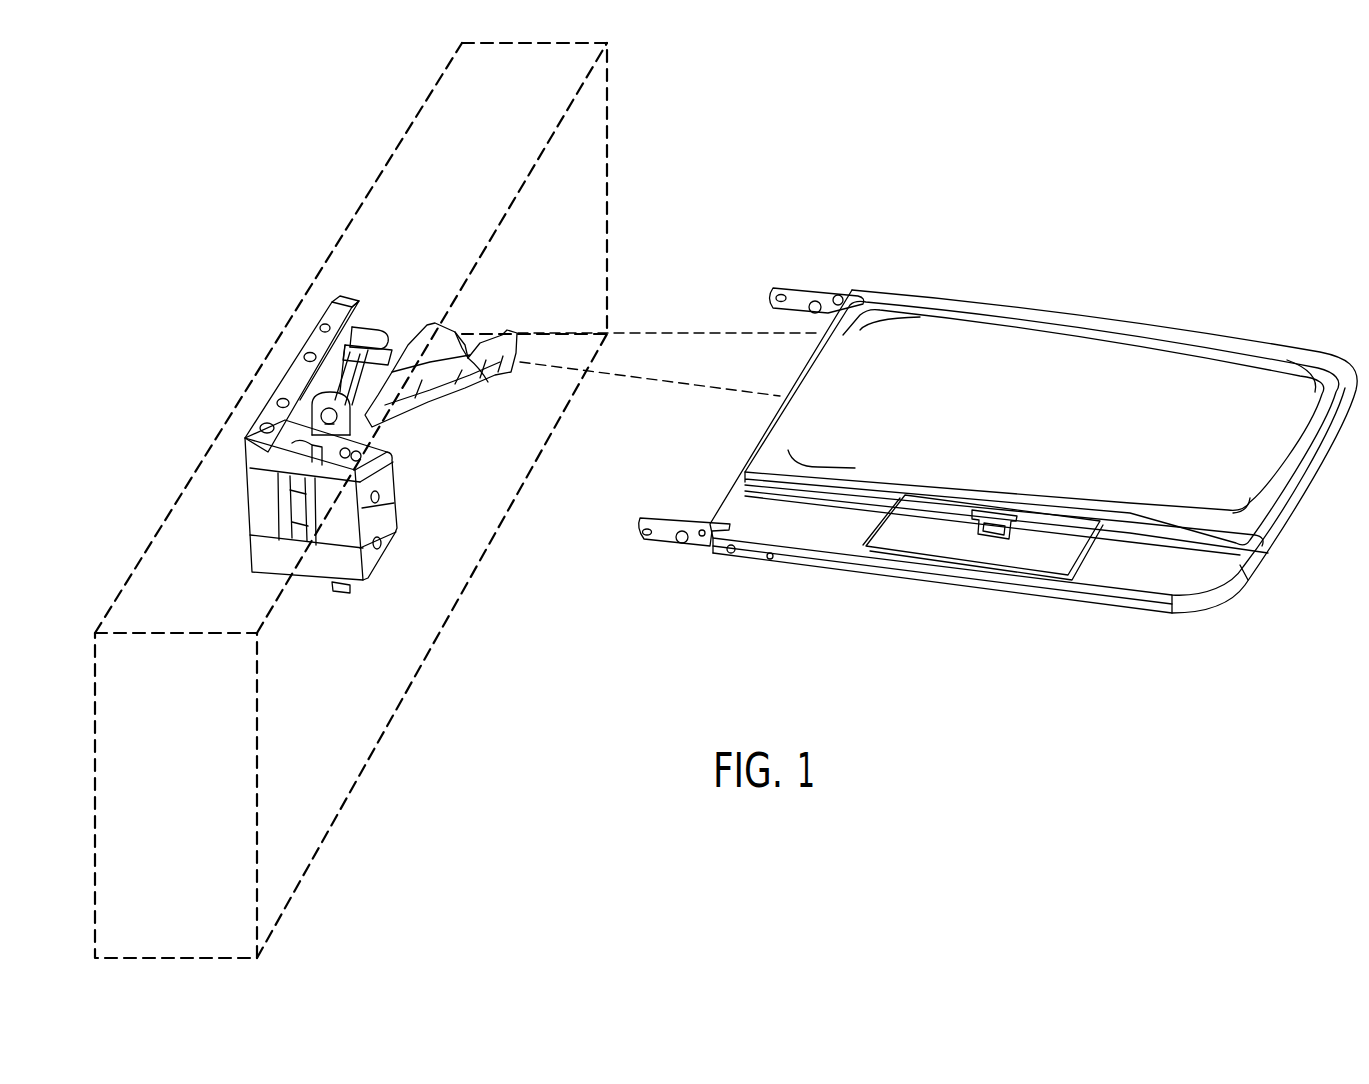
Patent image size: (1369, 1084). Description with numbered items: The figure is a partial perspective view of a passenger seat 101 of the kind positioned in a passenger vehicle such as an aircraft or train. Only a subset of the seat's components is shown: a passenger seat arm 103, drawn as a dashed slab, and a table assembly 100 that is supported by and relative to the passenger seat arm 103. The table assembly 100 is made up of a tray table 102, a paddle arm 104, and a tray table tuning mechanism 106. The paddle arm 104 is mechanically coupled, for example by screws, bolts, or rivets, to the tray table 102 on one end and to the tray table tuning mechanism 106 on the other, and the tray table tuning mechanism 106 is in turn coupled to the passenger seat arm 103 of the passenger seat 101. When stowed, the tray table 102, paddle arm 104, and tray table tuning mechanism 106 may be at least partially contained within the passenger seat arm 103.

The table assembly 100 is at (271, 253).
The passenger seat 101 is at (103, 353).
The tray table 102 is at (1028, 383).
The passenger seat arm 103 is at (590, 208).
The paddle arm 104 is at (470, 397).
The tray table tuning mechanism 106 is at (421, 575).